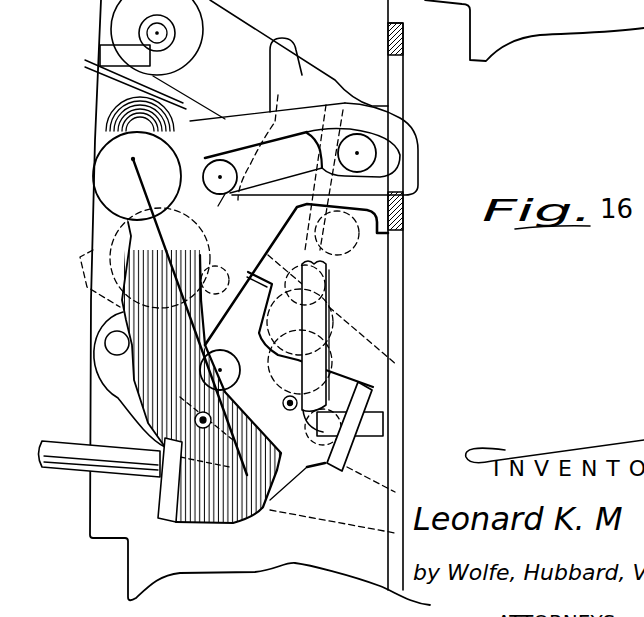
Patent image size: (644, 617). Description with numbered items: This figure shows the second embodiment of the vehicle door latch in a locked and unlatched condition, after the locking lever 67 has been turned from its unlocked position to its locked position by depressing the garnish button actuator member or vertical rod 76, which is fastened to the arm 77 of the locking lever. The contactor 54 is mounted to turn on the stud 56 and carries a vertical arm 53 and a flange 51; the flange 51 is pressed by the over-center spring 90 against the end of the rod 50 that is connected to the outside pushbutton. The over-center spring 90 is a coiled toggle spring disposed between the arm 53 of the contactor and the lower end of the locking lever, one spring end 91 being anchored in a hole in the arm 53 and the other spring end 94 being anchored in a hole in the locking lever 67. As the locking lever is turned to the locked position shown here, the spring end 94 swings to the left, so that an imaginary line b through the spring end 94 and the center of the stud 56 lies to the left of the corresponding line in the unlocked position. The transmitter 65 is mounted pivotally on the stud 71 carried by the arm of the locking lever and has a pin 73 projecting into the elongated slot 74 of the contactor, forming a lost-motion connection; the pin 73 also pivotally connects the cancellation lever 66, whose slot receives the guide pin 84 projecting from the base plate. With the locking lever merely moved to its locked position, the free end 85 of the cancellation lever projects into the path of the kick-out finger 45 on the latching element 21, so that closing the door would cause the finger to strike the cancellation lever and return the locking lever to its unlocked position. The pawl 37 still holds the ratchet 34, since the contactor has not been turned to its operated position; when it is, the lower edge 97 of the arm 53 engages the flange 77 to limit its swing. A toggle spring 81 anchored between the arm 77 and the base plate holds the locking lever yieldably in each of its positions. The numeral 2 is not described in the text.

The pawl 37 is at (99, 97).
The stud 56 is at (96, 163).
The kick-out finger 45 is at (214, 256).
The transmitter 65 is at (320, 75).
The stud 71 is at (280, 112).
The contactor 54 is at (412, 170).
The elongated slot 74 is at (227, 159).
The pin 73 is at (365, 148).
The ratchet 34 is at (95, 252).
The vertical arm 53 is at (115, 396).
The rod 50 is at (63, 470).
The flange 51 is at (160, 510).
The imaginary line b is at (228, 383).
The spring end 91 is at (188, 418).
The over-center spring 90 is at (177, 522).
The spring end 94 is at (230, 520).
The lower edge 97 is at (267, 505).
The guide pin 84 is at (280, 232).
The free end 85 is at (268, 325).
The vertical rod 76 is at (328, 335).
The toggle spring 81 is at (383, 437).
The arm 77 is at (371, 392).
The locking lever 67 is at (312, 466).
The latching element 21 is at (371, 292).
The cancellation lever 66 is at (365, 247).
The frame 2 is at (613, 12).